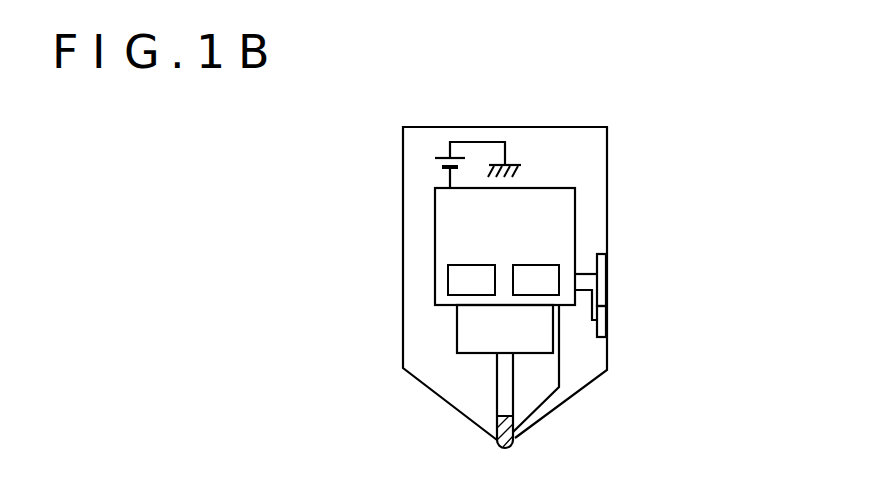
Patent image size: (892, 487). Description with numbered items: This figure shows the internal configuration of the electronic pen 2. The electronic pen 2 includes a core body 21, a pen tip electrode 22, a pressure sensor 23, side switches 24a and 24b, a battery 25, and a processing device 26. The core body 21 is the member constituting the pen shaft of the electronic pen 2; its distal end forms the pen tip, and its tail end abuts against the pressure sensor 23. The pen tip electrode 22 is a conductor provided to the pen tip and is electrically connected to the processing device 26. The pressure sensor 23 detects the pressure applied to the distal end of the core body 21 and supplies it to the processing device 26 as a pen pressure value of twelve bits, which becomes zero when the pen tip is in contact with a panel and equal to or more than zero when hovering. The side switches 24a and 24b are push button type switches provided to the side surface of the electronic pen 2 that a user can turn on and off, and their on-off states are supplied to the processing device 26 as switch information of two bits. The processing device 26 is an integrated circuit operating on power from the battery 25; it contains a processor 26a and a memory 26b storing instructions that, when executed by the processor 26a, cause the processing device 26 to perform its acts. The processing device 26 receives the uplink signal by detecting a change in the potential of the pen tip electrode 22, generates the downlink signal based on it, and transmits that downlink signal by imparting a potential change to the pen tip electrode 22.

The electronic pen 2 is at (607, 166).
The core body 21 is at (503, 383).
The pen tip electrode 22 is at (516, 446).
The pressure sensor 23 is at (491, 340).
The side switch 24a is at (607, 320).
The side switch 24b is at (607, 273).
The battery 25 is at (443, 156).
The processing device 26 is at (491, 258).
The processor 26a is at (471, 280).
The memory 26b is at (536, 280).